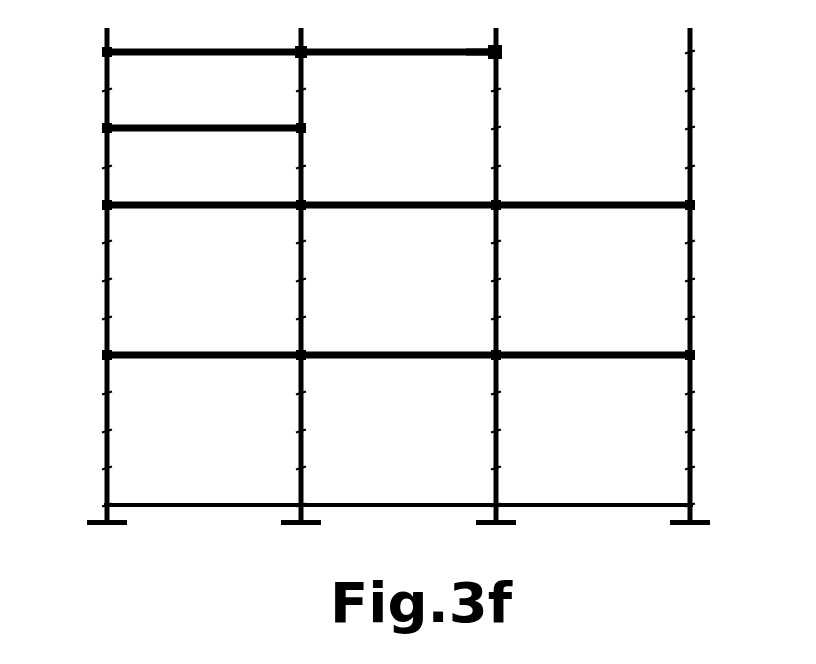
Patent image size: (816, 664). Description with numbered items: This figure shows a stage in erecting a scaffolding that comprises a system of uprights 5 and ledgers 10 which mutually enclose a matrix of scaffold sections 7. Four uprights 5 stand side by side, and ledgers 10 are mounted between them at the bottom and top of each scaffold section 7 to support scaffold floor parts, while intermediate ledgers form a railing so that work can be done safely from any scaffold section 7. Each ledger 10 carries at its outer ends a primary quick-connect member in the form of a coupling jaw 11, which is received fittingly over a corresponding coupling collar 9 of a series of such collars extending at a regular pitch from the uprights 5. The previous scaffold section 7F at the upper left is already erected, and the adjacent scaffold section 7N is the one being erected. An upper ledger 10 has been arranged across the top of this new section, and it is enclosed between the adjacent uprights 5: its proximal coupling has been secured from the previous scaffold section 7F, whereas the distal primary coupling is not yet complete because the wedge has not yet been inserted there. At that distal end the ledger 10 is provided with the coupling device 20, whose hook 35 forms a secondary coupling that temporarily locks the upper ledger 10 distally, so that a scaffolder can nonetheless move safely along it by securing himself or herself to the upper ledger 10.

The upright 5 is at (104, 258).
The scaffold section 7 is at (198, 309).
The previous scaffold section 7F is at (206, 111).
The scaffold section to be erected 7N is at (410, 169).
The coupling collar 9 is at (329, 42).
The coupling jaw 11 is at (306, 49).
The ledger 10 is at (402, 50).
The coupling device 20 is at (487, 57).
The hook 35 is at (500, 61).